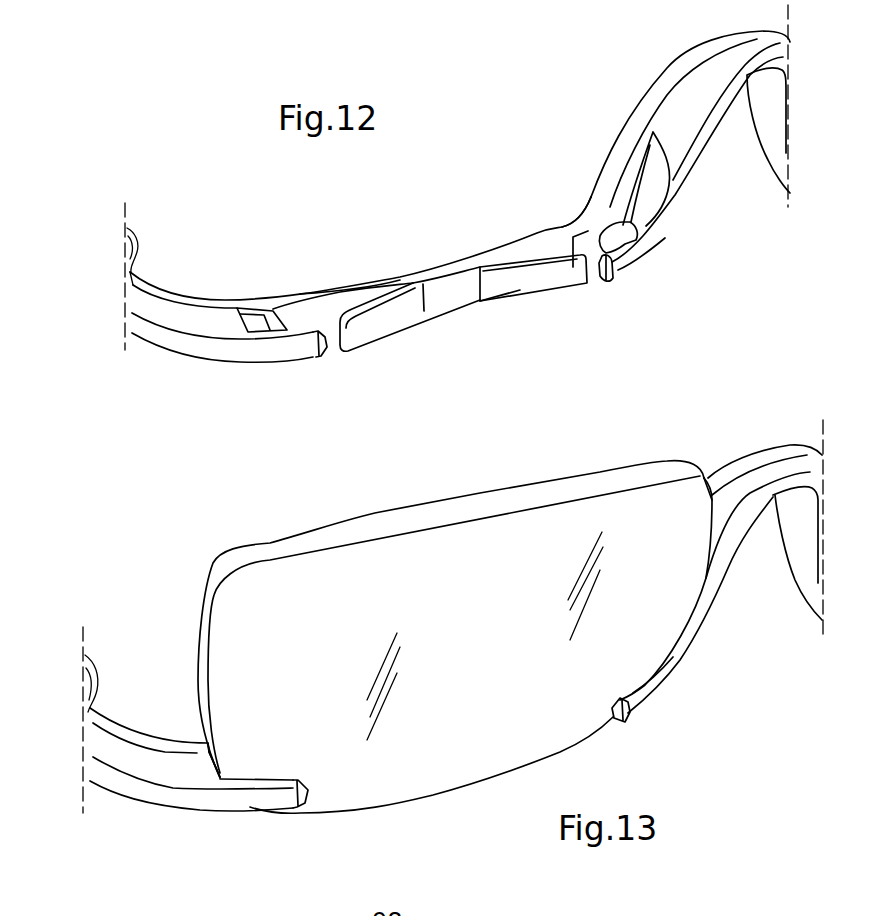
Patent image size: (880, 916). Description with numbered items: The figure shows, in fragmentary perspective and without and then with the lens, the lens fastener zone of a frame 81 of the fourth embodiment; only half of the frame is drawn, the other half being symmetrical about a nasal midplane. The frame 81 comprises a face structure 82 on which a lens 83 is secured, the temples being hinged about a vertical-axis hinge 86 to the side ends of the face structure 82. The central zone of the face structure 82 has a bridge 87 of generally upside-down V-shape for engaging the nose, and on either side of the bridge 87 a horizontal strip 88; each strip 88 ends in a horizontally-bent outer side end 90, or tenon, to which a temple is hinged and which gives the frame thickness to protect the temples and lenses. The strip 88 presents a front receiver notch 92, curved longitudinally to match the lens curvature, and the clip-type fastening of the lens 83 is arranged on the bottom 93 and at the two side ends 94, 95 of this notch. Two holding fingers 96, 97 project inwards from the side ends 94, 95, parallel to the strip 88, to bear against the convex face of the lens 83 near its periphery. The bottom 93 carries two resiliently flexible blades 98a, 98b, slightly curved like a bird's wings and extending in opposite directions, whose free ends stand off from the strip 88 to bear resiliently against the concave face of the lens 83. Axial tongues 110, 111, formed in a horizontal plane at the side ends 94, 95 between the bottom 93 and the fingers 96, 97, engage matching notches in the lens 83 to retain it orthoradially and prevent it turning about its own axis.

In FIG. 12, the frame 81 is at (583, 110).
In FIG. 13, the frame 81 is at (711, 452).
In FIG. 12, the face structure 82 is at (173, 378).
In FIG. 13, the face structure 82 is at (127, 832).
In FIG. 13, the lens 83 is at (517, 492).
In FIG. 12, the vertical-axis hinge 86 is at (136, 243).
In FIG. 13, the vertical-axis hinge 86 is at (105, 678).
In FIG. 12, the bridge 87 is at (713, 58).
In FIG. 13, the bridge 87 is at (779, 459).
In FIG. 12, the horizontal strip 88 is at (423, 270).
In FIG. 13, the horizontal strip 88 is at (200, 802).
In FIG. 12, the outer side end (tenon) 90 is at (127, 297).
In FIG. 13, the outer side end (tenon) 90 is at (97, 742).
In FIG. 12, the front receiver notch 92 is at (463, 333).
In FIG. 12, the bottom of the receiver notch 93 is at (327, 306).
In FIG. 12, the side end of the receiver notch 94 is at (253, 320).
In FIG. 13, the side end of the receiver notch 94 is at (220, 777).
In FIG. 12, the side end of the receiver notch 95 is at (657, 182).
In FIG. 12, the holding finger 96 is at (300, 347).
In FIG. 13, the holding finger 96 is at (287, 801).
In FIG. 12, the holding finger 97 is at (623, 263).
In FIG. 13, the holding finger 97 is at (636, 708).
In FIG. 12, the resiliently flexible blade 98a is at (387, 323).
In FIG. 12, the resiliently flexible blade 98b is at (553, 283).
In FIG. 12, the axial tongue 110 is at (617, 233).
In FIG. 12, the axial tongue 111 is at (267, 323).